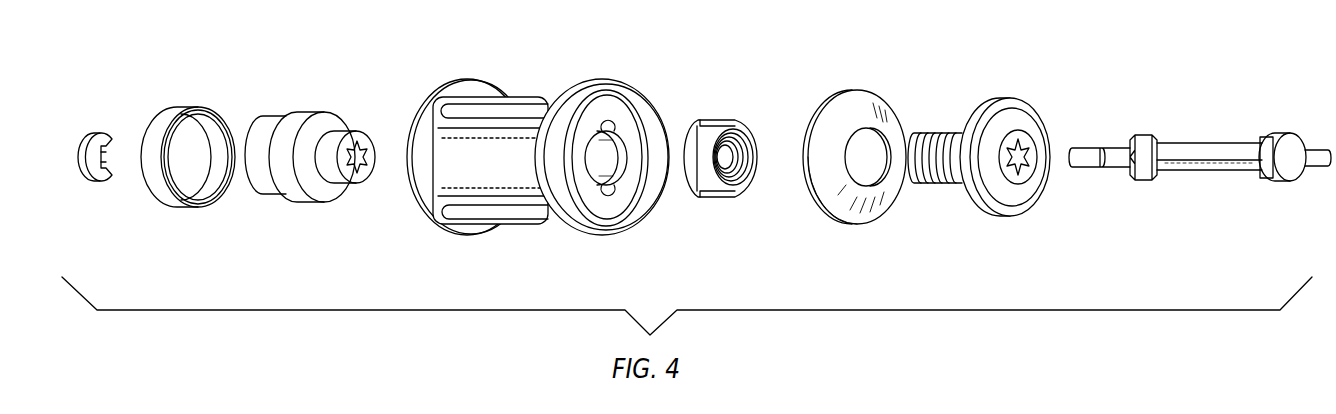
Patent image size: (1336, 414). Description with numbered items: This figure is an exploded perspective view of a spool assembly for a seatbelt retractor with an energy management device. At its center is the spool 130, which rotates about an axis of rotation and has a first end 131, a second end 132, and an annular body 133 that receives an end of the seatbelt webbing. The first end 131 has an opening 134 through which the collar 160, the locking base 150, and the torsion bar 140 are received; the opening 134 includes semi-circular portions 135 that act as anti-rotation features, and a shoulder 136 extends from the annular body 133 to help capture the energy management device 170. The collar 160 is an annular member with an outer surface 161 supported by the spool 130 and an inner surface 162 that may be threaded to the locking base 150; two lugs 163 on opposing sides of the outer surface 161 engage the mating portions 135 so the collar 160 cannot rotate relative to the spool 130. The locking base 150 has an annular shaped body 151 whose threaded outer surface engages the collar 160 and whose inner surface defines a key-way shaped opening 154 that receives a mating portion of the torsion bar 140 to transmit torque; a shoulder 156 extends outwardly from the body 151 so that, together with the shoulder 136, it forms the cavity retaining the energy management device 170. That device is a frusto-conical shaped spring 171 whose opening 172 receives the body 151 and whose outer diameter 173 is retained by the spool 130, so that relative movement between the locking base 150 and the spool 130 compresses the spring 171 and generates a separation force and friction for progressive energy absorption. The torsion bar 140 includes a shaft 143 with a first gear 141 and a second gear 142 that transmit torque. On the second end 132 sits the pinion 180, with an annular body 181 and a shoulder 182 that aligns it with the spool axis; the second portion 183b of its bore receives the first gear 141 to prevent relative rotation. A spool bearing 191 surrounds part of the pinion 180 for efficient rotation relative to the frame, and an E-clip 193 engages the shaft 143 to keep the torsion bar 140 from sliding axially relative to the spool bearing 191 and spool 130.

The spool 130 is at (552, 160).
The first end 131 is at (625, 118).
The second end 132 is at (426, 212).
The annular body 133 is at (524, 100).
The opening 134 is at (615, 157).
The semi-circular portion 135 is at (602, 106).
The shoulder 136 is at (581, 228).
The torsion bar 140 is at (1200, 158).
The first gear 141 is at (1140, 135).
The second gear 142 is at (1270, 135).
The shaft 143 is at (1200, 146).
The locking base 150 is at (992, 165).
The annular shaped body 151 is at (935, 134).
The opening 154 is at (1037, 119).
The shoulder 156 is at (983, 104).
The collar 160 is at (730, 174).
The outer surface 161 is at (704, 192).
The inner surface 162 is at (749, 129).
The lug 163 is at (720, 119).
The energy management device 170 is at (842, 198).
The frusto-conical shaped spring 171 is at (834, 205).
The opening 172 is at (878, 195).
The outer diameter 173 is at (824, 222).
The pinion 180 is at (317, 167).
The annular body 181 is at (264, 118).
The shoulder 182 is at (332, 137).
The second portion 183b is at (383, 166).
The spool bearing 191 is at (170, 112).
The E-clip 193 is at (92, 134).